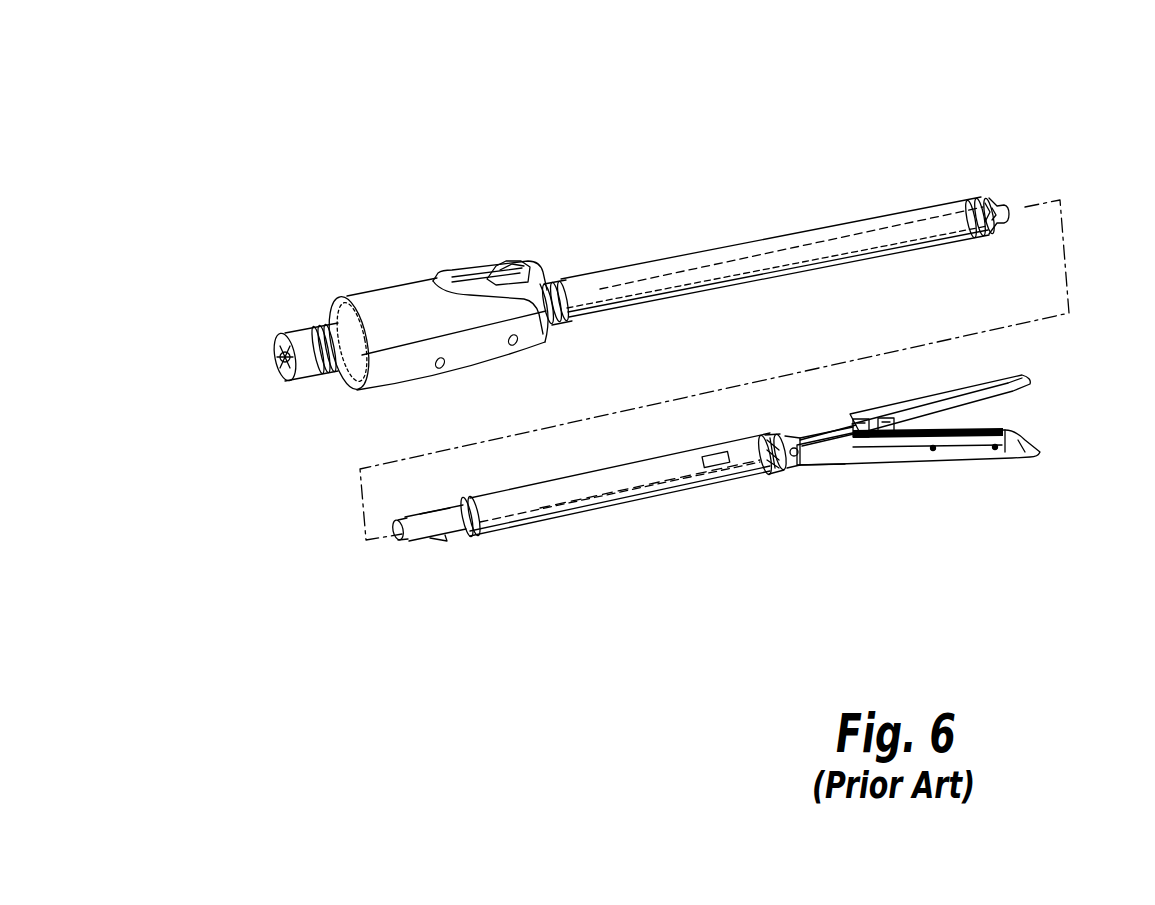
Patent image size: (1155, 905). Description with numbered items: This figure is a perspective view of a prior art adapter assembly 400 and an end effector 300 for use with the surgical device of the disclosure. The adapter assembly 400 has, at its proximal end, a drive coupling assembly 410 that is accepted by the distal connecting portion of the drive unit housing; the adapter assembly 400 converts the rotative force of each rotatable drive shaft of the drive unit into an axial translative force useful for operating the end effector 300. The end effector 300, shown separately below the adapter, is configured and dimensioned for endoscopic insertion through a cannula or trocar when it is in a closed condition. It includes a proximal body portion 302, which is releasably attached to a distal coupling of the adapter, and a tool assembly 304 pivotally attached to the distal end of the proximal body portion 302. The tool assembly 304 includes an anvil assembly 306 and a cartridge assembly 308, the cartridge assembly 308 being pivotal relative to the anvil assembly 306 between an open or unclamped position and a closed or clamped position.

The adapter assembly 400 is at (771, 136).
The drive coupling assembly 410 is at (299, 331).
The end effector 300 is at (749, 496).
The proximal body portion 302 is at (507, 534).
The tool assembly 304 is at (905, 471).
The anvil assembly 306 is at (1040, 378).
The cartridge assembly 308 is at (1003, 462).